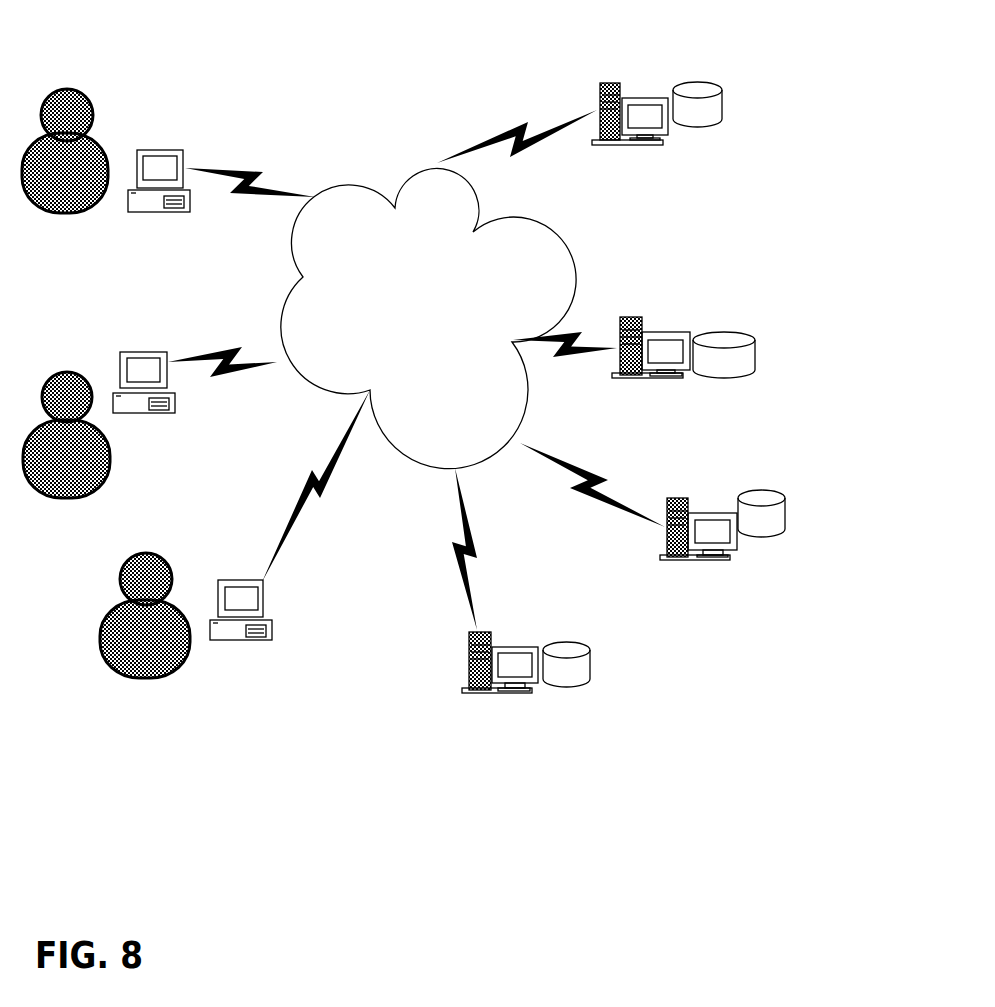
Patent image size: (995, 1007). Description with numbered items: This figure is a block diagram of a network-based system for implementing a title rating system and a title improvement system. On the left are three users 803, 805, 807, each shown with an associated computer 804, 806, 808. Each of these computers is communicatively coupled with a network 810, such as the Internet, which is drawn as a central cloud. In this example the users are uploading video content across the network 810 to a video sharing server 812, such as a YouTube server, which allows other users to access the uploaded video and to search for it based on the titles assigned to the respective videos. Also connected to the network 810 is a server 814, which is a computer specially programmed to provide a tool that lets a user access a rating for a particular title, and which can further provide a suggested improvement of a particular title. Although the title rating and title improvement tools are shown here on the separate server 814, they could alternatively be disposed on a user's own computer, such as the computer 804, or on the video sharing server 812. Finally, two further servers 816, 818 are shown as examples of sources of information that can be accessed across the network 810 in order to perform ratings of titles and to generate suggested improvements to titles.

The user 803 is at (68, 90).
The computer 804 is at (160, 150).
The user 805 is at (70, 375).
The computer 806 is at (145, 352).
The user 807 is at (147, 553).
The computer 808 is at (238, 640).
The network 810 is at (443, 334).
The server 812 is at (607, 145).
The server 814 is at (627, 377).
The server 816 is at (673, 558).
The server 818 is at (513, 693).